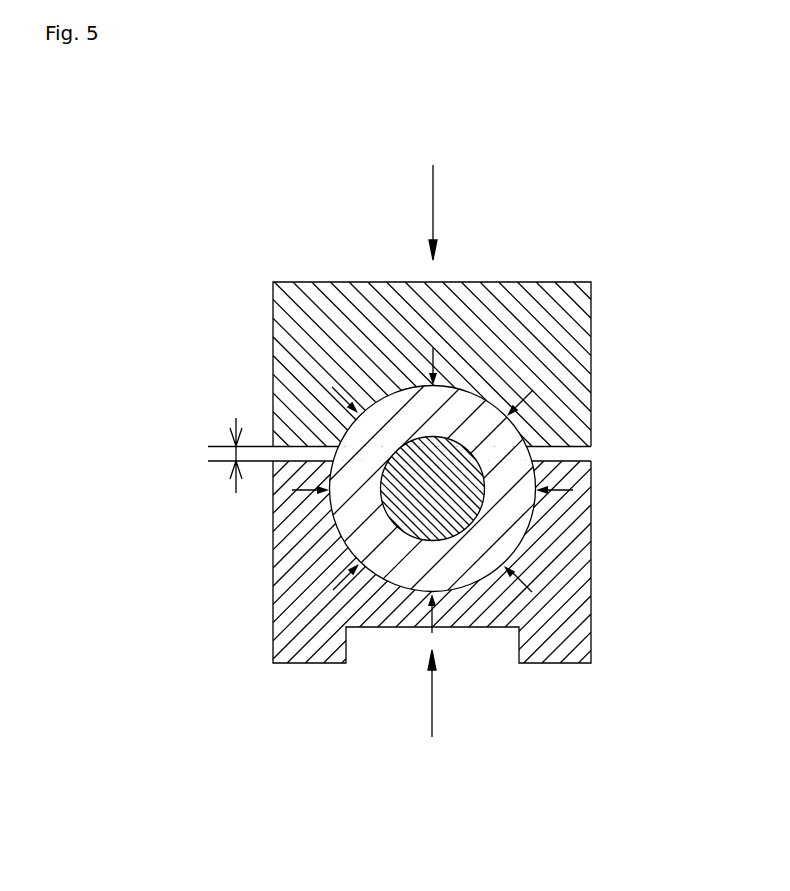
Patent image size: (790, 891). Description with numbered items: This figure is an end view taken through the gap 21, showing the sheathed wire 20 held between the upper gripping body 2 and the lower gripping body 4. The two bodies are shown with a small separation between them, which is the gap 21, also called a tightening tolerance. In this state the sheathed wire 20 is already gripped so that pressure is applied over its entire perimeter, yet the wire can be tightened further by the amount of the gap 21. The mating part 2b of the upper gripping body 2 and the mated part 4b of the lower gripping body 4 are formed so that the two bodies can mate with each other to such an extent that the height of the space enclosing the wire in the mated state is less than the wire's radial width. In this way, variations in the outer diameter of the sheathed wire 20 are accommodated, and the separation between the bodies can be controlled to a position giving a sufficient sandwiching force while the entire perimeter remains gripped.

The upper gripping body 2 is at (592, 348).
The lower gripping body 4 is at (592, 553).
The mating part 2b is at (588, 452).
The mated part 4b is at (553, 461).
The sheathed wire 20 is at (395, 398).
The gap 21 is at (238, 454).